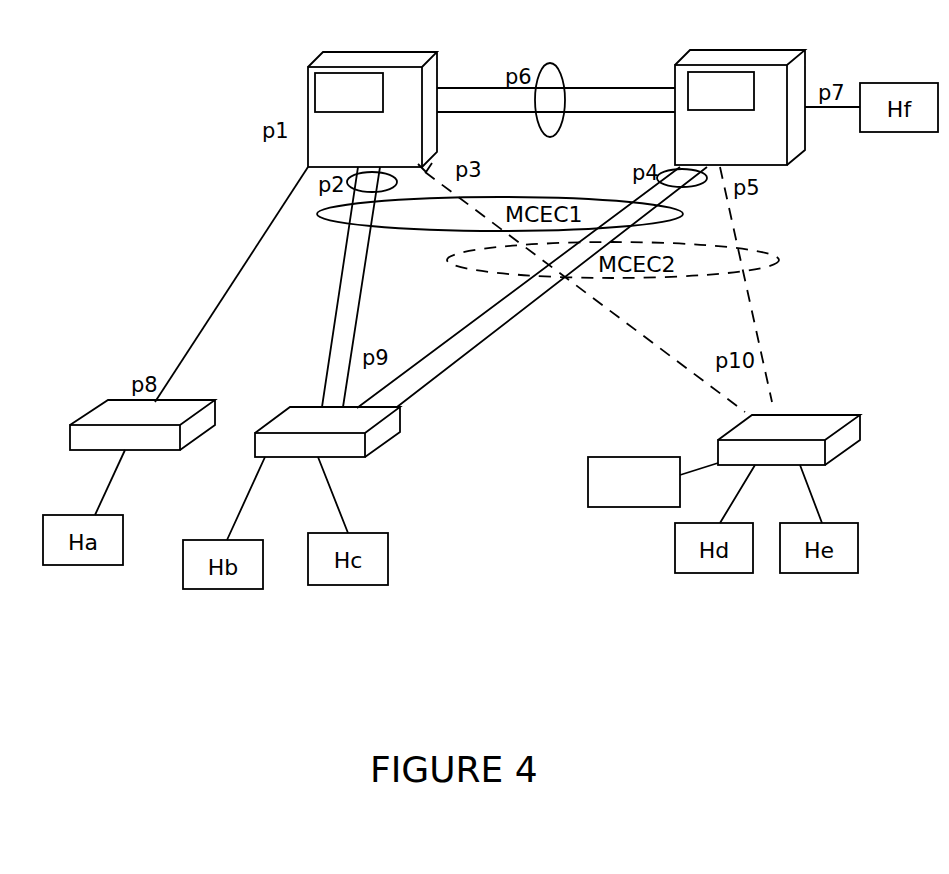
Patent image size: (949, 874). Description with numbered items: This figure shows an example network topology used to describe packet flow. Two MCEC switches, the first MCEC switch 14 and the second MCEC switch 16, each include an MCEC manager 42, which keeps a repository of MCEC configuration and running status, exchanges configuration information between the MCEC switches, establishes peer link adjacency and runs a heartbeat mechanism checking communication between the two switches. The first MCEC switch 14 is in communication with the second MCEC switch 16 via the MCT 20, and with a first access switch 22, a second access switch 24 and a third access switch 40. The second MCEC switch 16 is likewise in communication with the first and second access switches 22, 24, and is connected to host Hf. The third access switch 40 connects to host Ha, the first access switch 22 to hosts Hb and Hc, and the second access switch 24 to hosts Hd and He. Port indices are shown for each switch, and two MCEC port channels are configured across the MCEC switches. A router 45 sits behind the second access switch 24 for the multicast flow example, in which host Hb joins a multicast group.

The MCEC switch 14 is at (365, 52).
The MCEC switch 16 is at (758, 50).
The MCEC manager 42 is at (310, 68).
The MCT 20 is at (552, 66).
The access switch 22 is at (385, 430).
The access switch 24 is at (820, 415).
The access switch 40 is at (84, 412).
The router 45 is at (654, 457).